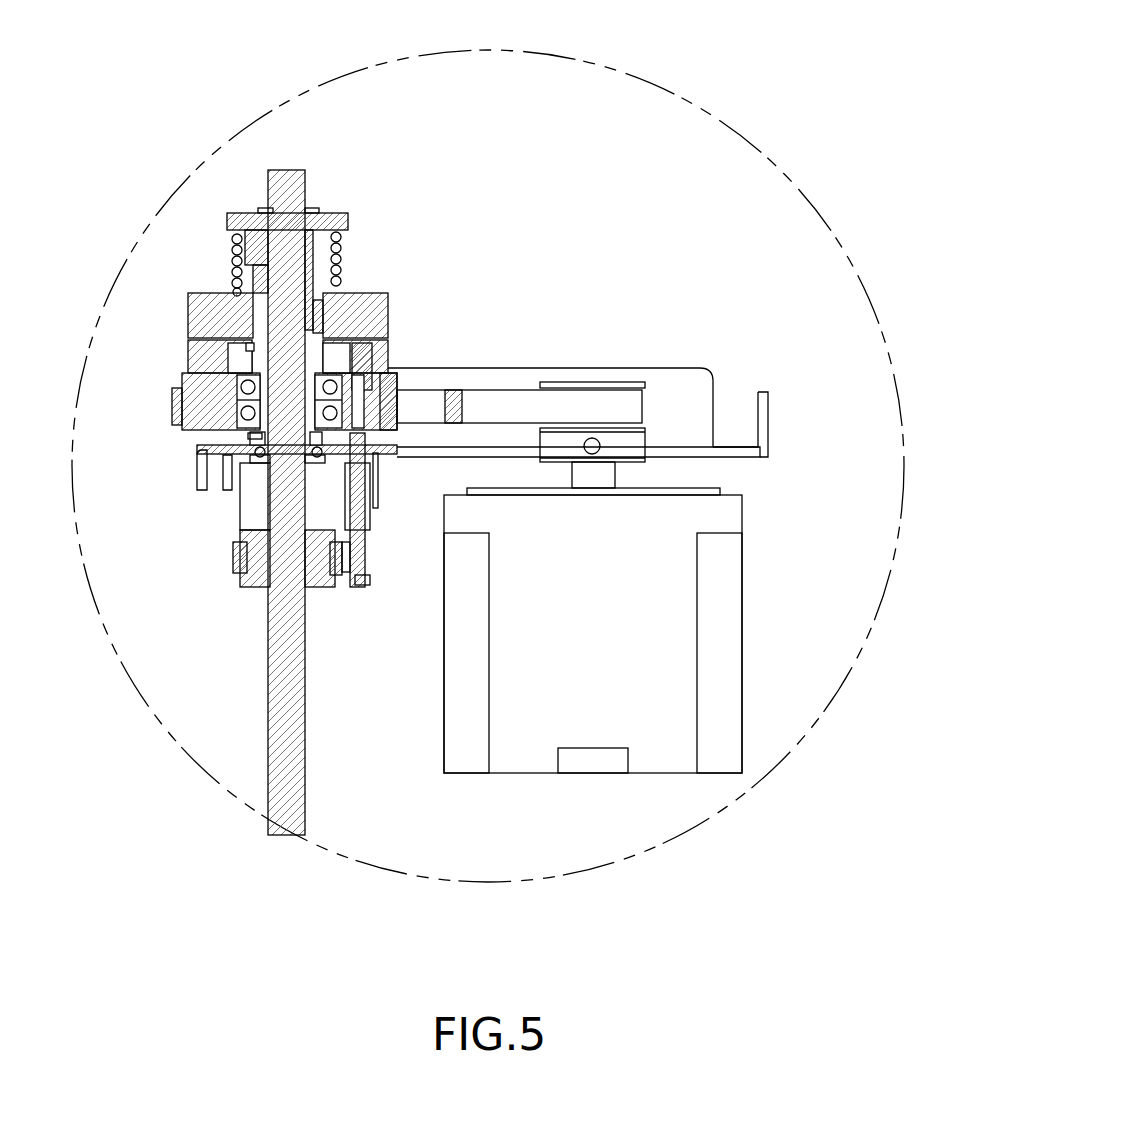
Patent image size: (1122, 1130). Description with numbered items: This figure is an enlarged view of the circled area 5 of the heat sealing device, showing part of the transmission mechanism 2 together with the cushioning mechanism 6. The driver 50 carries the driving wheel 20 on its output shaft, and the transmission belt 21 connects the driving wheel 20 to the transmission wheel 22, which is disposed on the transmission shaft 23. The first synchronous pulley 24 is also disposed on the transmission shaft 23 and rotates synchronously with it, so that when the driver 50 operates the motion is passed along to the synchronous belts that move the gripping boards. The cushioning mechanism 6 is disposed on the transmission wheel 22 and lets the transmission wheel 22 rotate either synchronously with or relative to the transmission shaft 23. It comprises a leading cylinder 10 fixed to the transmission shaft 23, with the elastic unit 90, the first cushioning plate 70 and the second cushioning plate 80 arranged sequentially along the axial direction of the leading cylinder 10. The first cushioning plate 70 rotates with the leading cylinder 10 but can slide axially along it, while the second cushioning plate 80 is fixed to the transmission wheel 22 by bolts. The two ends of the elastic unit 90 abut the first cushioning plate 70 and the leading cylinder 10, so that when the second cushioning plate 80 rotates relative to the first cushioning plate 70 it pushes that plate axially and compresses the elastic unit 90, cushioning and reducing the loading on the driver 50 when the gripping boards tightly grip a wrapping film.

The circled area 5 is at (692, 100).
The cushioning mechanism 6 is at (188, 247).
The leading cylinder 10 is at (328, 218).
The elastic unit 90 is at (347, 258).
The first cushioning plate 70 is at (188, 308).
The second cushioning plate 80 is at (187, 354).
The transmission wheel 22 is at (205, 410).
The first synchronous pulley 24 is at (260, 572).
The transmission shaft 23 is at (285, 698).
The transmission mechanism 2 is at (342, 777).
The transmission belt 21 is at (497, 403).
The driving wheel 20 is at (622, 382).
The driver 50 is at (675, 663).